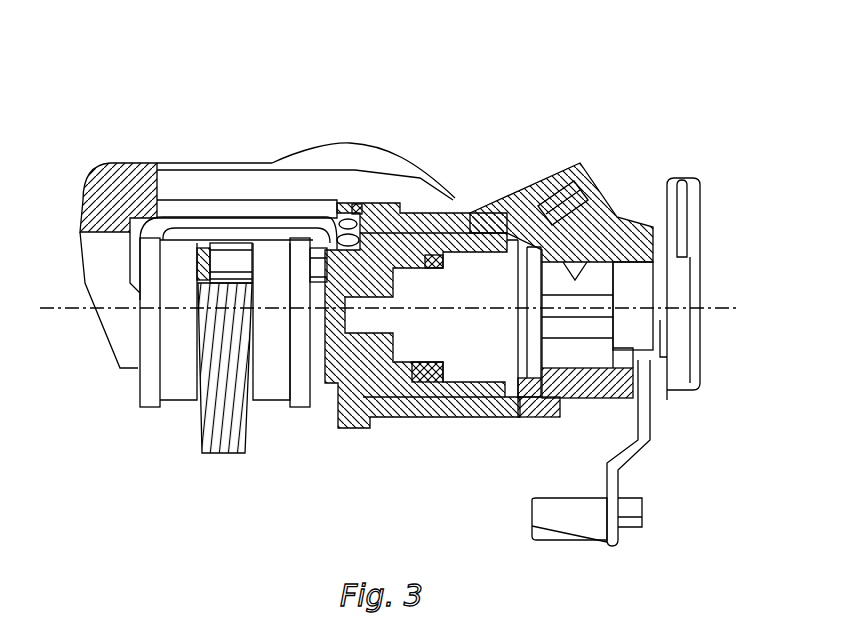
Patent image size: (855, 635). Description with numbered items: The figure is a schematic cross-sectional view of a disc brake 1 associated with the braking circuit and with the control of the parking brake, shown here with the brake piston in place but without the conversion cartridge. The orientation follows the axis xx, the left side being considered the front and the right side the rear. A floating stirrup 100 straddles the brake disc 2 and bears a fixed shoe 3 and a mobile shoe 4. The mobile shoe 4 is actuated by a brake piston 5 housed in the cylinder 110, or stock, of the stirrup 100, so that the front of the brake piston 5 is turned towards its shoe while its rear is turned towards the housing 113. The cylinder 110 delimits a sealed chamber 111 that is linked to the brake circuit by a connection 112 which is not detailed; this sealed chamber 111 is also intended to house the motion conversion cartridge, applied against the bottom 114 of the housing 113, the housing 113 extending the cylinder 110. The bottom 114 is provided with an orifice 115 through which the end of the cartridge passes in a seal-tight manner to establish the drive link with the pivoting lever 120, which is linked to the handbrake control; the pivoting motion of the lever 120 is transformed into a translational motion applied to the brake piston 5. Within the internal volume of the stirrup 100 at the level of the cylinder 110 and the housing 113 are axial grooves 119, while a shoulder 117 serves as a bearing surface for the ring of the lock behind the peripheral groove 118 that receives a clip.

The disc brake 1 is at (557, 90).
The floating stirrup 100 is at (214, 163).
The brake disc 2 is at (225, 437).
The fixed shoe 3 is at (177, 390).
The mobile shoe 4 is at (270, 393).
The brake piston 5 is at (410, 363).
The cylinder 110 is at (440, 417).
The sealed chamber 111 is at (465, 290).
The connection 112 is at (558, 200).
The housing 113 is at (592, 262).
The bottom 114 is at (598, 360).
The orifice 115 is at (632, 242).
The shoulder 117 is at (540, 397).
The peripheral groove 118 is at (527, 393).
The axial grooves 119 is at (635, 332).
The pivoting lever 120 is at (632, 430).